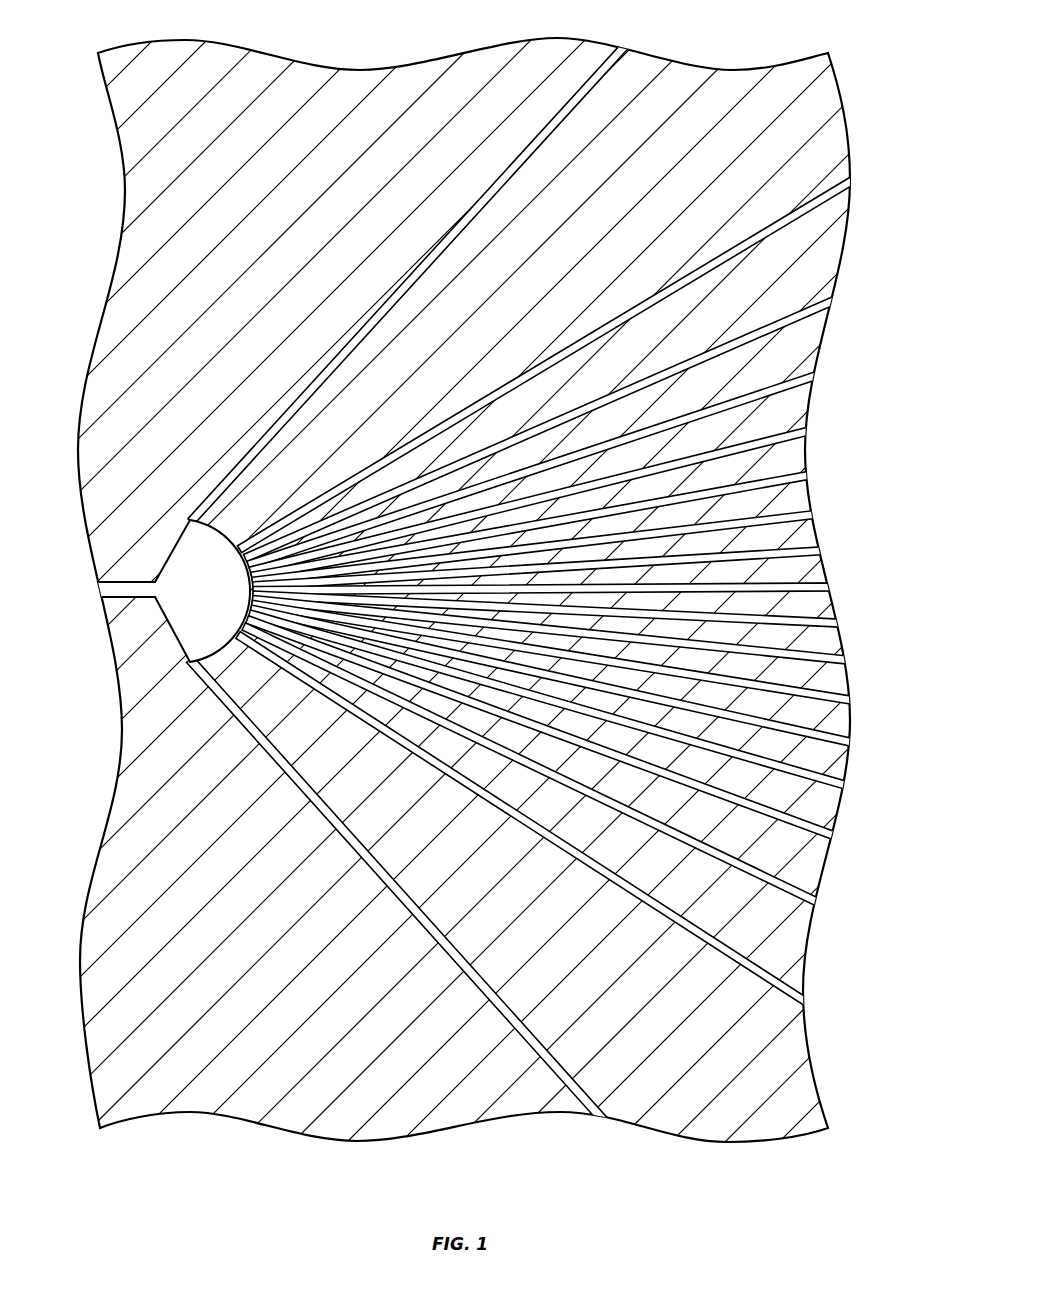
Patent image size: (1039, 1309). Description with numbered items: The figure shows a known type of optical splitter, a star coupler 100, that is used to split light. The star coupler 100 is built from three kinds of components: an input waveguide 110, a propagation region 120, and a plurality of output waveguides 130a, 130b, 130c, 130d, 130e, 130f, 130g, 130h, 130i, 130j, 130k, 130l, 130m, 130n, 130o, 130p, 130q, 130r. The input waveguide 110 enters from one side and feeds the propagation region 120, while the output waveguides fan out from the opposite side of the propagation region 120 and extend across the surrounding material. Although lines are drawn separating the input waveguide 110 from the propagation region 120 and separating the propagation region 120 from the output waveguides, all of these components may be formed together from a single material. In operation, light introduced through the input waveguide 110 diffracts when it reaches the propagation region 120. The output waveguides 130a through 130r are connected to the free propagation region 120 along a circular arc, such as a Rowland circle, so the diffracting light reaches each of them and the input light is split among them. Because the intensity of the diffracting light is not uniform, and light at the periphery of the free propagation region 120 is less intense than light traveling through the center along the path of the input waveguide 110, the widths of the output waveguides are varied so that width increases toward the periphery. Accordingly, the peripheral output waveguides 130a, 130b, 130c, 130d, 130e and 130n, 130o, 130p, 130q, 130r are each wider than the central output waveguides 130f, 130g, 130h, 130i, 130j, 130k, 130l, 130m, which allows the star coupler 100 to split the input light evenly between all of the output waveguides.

The star coupler 100 is at (212, 50).
The input waveguide 110 is at (124, 598).
The propagation region 120 is at (173, 548).
The output waveguide 130a is at (412, 279).
The output waveguide 130b is at (551, 362).
The output waveguide 130c is at (547, 426).
The output waveguide 130d is at (537, 469).
The output waveguide 130e is at (534, 500).
The output waveguide 130f is at (536, 524).
The output waveguide 130g is at (539, 547).
The output waveguide 130h is at (543, 568).
The output waveguide 130i is at (548, 589).
The output waveguide 130j is at (553, 609).
The output waveguide 130k is at (557, 630).
The output waveguide 130l is at (558, 653).
The output waveguide 130m is at (558, 677).
The output waveguide 130n is at (554, 701).
The output waveguide 130o is at (547, 730).
The output waveguide 130p is at (535, 766).
The output waveguide 130q is at (527, 822).
The output waveguide 130r is at (399, 892).